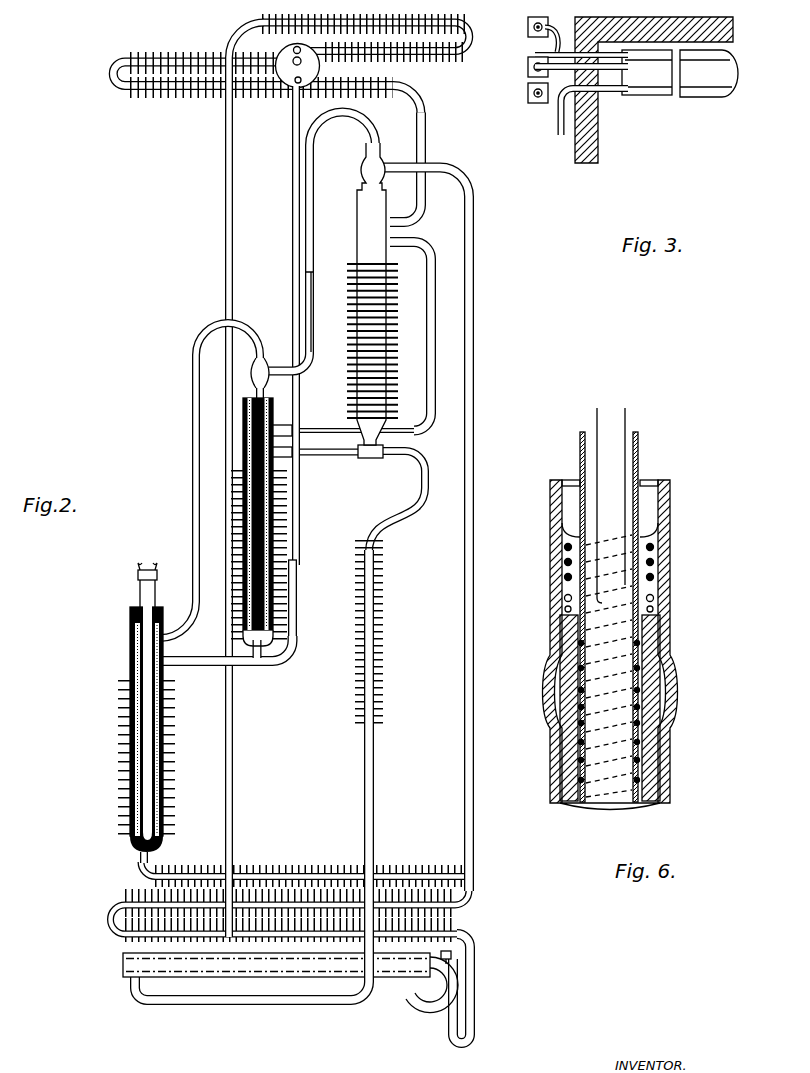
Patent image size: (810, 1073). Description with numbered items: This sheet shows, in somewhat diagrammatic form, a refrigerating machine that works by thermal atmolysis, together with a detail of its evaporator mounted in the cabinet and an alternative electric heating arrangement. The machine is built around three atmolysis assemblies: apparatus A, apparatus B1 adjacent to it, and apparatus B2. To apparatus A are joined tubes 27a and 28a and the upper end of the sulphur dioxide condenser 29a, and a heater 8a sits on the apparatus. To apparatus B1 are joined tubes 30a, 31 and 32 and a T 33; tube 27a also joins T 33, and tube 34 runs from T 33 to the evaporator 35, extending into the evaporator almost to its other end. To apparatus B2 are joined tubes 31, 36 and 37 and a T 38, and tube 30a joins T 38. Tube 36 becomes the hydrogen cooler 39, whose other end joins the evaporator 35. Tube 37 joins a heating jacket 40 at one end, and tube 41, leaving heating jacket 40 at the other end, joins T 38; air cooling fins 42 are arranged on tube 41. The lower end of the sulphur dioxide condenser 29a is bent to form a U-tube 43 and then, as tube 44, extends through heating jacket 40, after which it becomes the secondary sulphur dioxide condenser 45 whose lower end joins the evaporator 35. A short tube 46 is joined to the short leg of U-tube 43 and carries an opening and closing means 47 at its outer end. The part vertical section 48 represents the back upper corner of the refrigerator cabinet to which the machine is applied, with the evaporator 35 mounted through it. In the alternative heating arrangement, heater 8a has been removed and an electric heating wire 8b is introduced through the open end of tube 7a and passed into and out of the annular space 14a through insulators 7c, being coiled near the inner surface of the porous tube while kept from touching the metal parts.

In FIG. 2, the hydrogen cooler 39 is at (160, 92).
In FIG. 3, the hydrogen cooler 39 is at (535, 72).
In FIG. 2, the secondary sulphur dioxide condenser 45 is at (410, 52).
In FIG. 3, the secondary sulphur dioxide condenser 45 is at (535, 52).
In FIG. 2, the evaporator 35 is at (320, 69).
In FIG. 3, the evaporator 35 is at (700, 100).
In FIG. 2, the tube 44 is at (230, 178).
In FIG. 2, the atmolysis apparatus B2 is at (365, 212).
In FIG. 2, the tube 36 is at (422, 204).
In FIG. 2, the tube 37 is at (474, 310).
In FIG. 2, the tube 32 is at (306, 366).
In FIG. 2, the tube 31 is at (304, 428).
In FIG. 2, the tube 30a is at (334, 458).
In FIG. 2, the T 38 is at (372, 459).
In FIG. 2, the atmolysis apparatus B1 is at (280, 531).
In FIG. 2, the tube 28a is at (196, 531).
In FIG. 2, the heater 8a is at (140, 590).
In FIG. 2, the atmolysis apparatus A is at (118, 708).
In FIG. 2, the tube 27a is at (184, 665).
In FIG. 2, the T 33 is at (256, 660).
In FIG. 2, the tube 34 is at (298, 600).
In FIG. 3, the tube 34 is at (556, 127).
In FIG. 2, the air cooling fins 42 is at (384, 625).
In FIG. 2, the sulphur dioxide condenser 29a is at (250, 878).
In FIG. 2, the opening and closing means 47 is at (452, 951).
In FIG. 2, the short tube 46 is at (453, 960).
In FIG. 2, the U-tube 43 is at (474, 1018).
In FIG. 2, the heating jacket 40 is at (392, 983).
In FIG. 2, the tube 41 is at (263, 1003).
In FIG. 3, the refrigerator cabinet corner section 48 is at (600, 150).
In FIG. 6, the annular space 14a is at (640, 766).
In FIG. 6, the tube 7a is at (640, 462).
In FIG. 6, the insulators 7c is at (565, 598).
In FIG. 6, the heating wire 8b is at (595, 418).